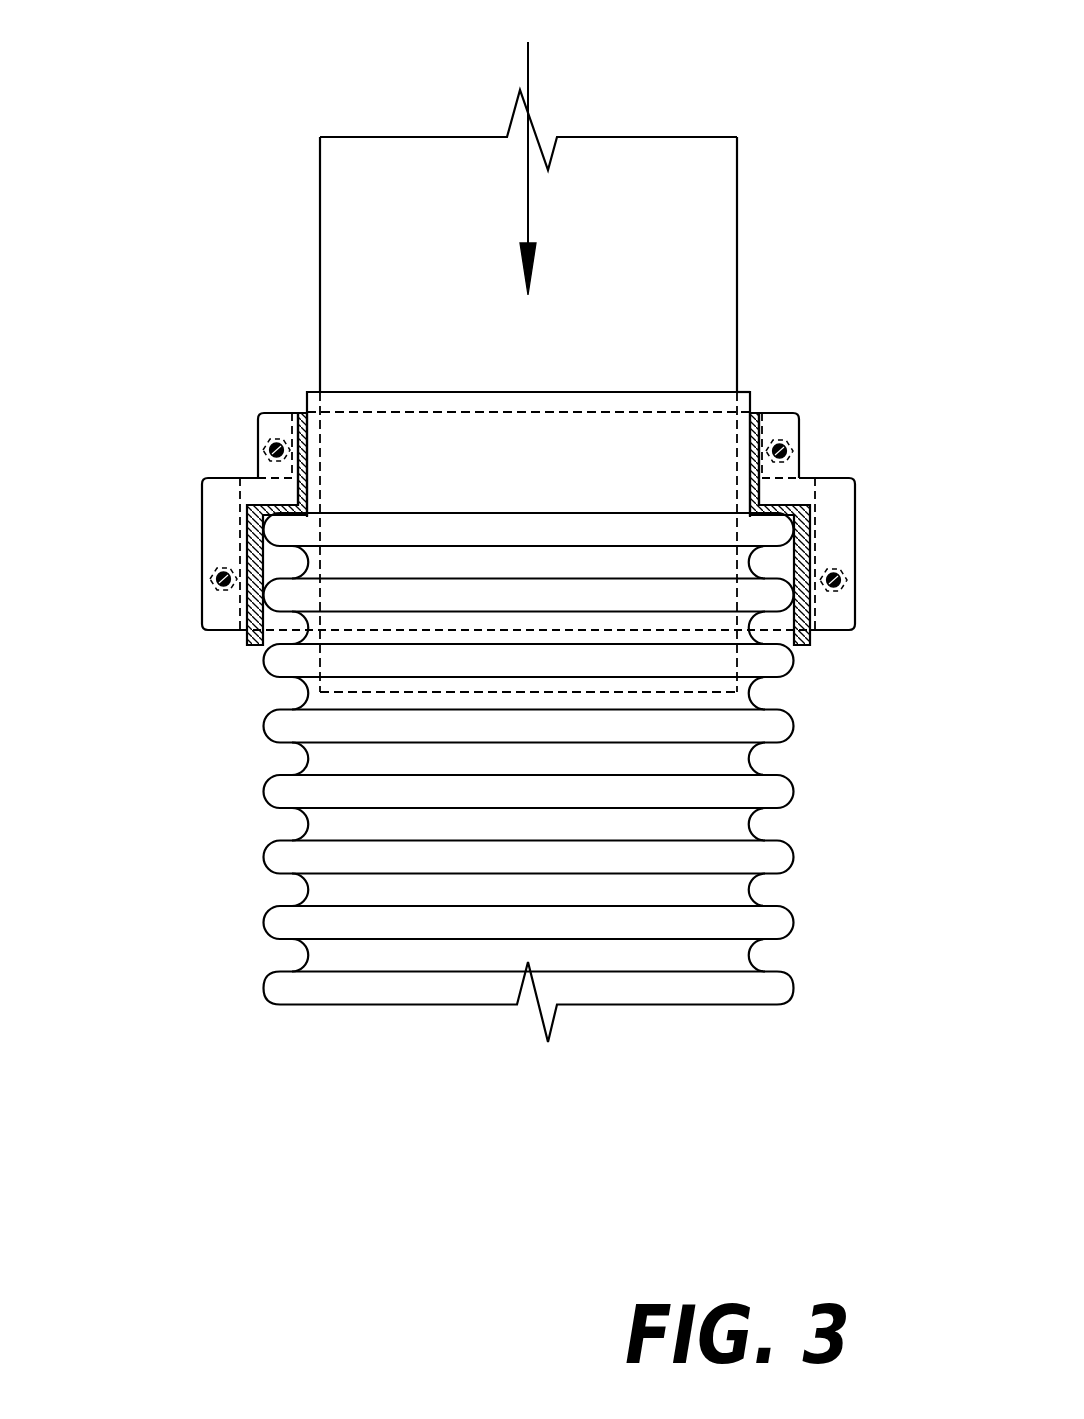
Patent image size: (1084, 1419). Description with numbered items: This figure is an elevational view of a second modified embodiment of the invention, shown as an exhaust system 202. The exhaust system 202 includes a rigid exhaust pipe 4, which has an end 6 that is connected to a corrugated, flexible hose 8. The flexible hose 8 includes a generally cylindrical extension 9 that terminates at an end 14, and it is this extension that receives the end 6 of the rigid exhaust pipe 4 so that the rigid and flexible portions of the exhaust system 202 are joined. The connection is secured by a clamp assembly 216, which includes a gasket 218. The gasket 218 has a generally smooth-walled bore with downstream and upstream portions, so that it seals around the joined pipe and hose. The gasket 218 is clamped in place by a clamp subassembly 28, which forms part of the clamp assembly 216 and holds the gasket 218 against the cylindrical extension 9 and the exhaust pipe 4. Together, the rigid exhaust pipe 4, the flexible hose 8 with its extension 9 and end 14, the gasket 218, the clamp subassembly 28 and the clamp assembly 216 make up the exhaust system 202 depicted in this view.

The rigid exhaust pipe 4 is at (737, 137).
The end 6 is at (572, 692).
The corrugated, flexible hose 8 is at (748, 1005).
The generally cylindrical extension 9 is at (750, 392).
The end 14 is at (570, 392).
The clamp subassembly 28 is at (862, 622).
The exhaust system 202 is at (226, 276).
The clamp assembly 216 is at (808, 417).
The gasket 218 is at (808, 647).